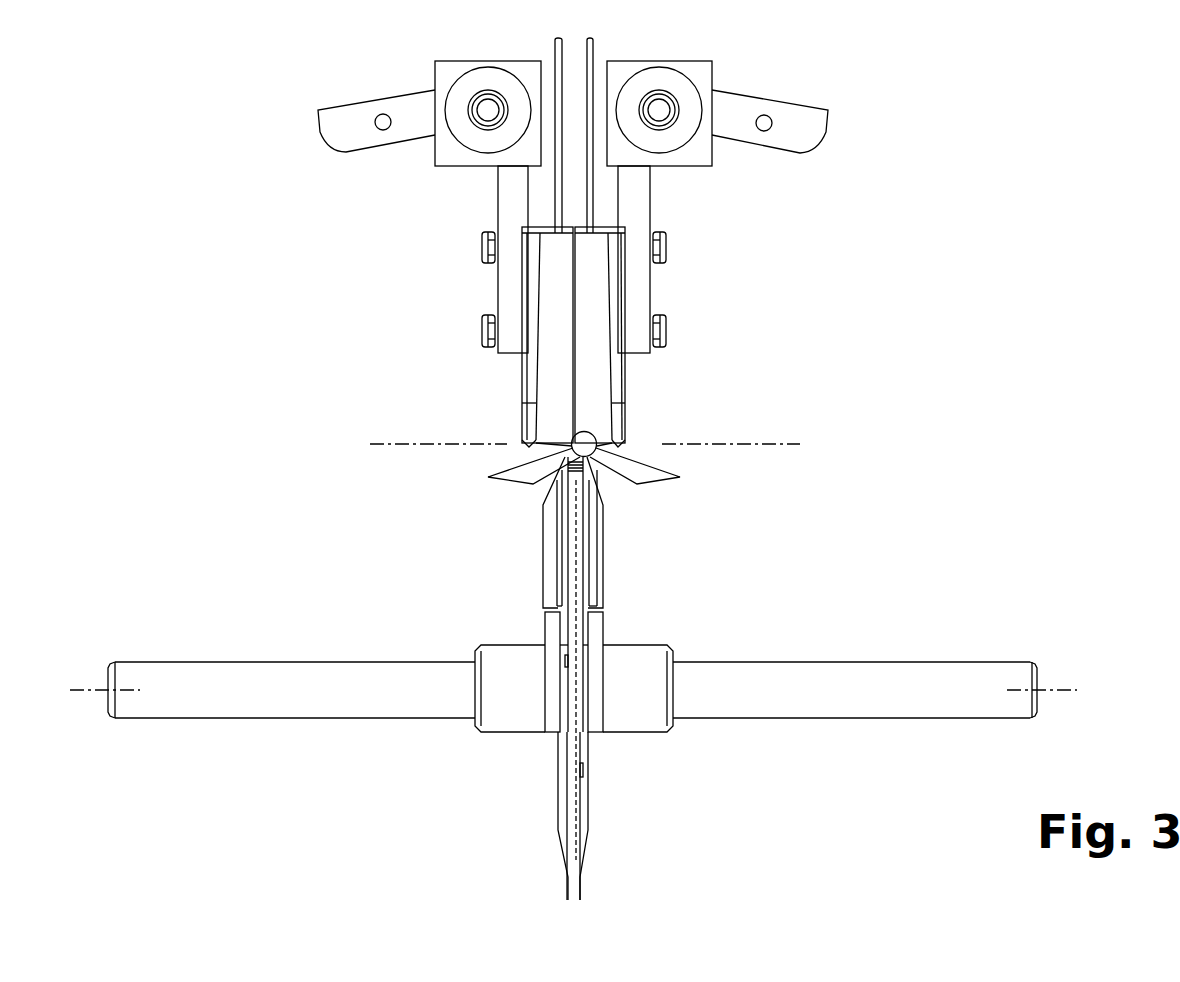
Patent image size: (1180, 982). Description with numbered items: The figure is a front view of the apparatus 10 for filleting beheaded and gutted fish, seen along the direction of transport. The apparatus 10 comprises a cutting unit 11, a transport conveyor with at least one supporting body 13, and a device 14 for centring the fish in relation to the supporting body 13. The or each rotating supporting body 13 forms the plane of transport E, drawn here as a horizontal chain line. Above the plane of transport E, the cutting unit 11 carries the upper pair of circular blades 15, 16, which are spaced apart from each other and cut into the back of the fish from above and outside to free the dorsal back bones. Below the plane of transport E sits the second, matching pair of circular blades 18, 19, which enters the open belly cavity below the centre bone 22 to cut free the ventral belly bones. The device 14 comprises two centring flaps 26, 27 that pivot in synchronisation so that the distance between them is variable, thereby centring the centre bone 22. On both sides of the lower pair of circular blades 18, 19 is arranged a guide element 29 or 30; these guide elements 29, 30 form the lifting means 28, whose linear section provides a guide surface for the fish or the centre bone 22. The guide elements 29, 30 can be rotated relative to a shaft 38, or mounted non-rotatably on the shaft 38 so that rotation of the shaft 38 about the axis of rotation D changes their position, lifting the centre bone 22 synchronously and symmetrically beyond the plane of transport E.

The apparatus 10 is at (892, 114).
The cutting unit 11 is at (780, 246).
The supporting body 13 is at (575, 580).
The device for centring the fish 14 is at (445, 190).
The circular blade 15 is at (556, 48).
The circular blade 16 is at (593, 46).
The circular blade 18 is at (560, 813).
The circular blade 19 is at (588, 813).
The centre bone 22 is at (590, 433).
The centring flap 26 is at (550, 386).
The centring flap 27 is at (598, 386).
The lifting means 28 is at (534, 572).
The guide element 29 is at (553, 515).
The guide element 30 is at (596, 515).
The shaft 38 is at (824, 676).
The plane of transport E is at (765, 443).
The axis of rotation D is at (1065, 688).